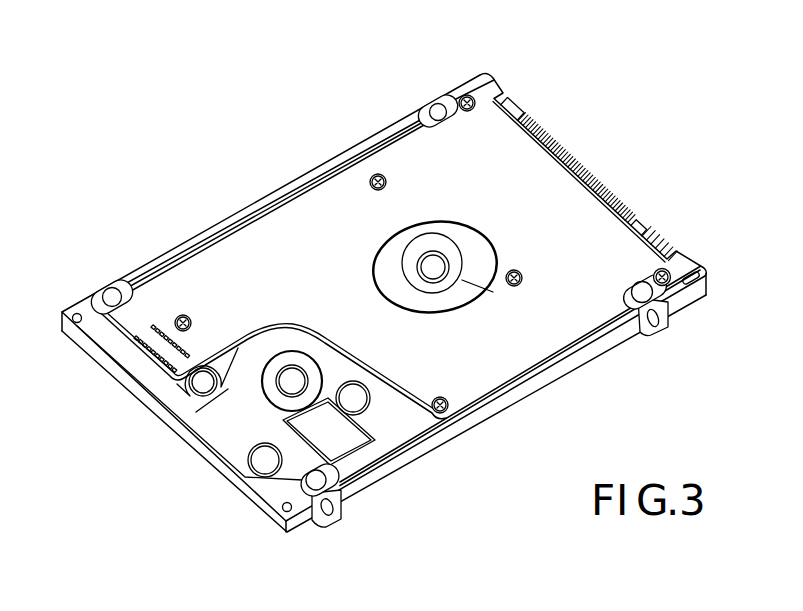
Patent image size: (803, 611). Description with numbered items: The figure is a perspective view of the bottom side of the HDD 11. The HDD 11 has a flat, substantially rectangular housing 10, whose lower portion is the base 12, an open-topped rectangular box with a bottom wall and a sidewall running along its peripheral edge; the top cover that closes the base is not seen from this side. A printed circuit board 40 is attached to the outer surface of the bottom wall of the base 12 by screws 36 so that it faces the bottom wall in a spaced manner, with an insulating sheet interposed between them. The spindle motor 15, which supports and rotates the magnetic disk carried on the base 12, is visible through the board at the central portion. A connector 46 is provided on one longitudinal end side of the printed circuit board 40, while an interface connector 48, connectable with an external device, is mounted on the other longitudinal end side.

The housing 10 is at (395, 281).
The HDD 11 is at (384, 282).
The base 12 is at (417, 451).
The spindle motor 15 is at (445, 302).
The screws 36 is at (466, 95).
The printed circuit board 40 is at (287, 225).
The connector 46 is at (140, 349).
The interface connector 48 is at (615, 193).